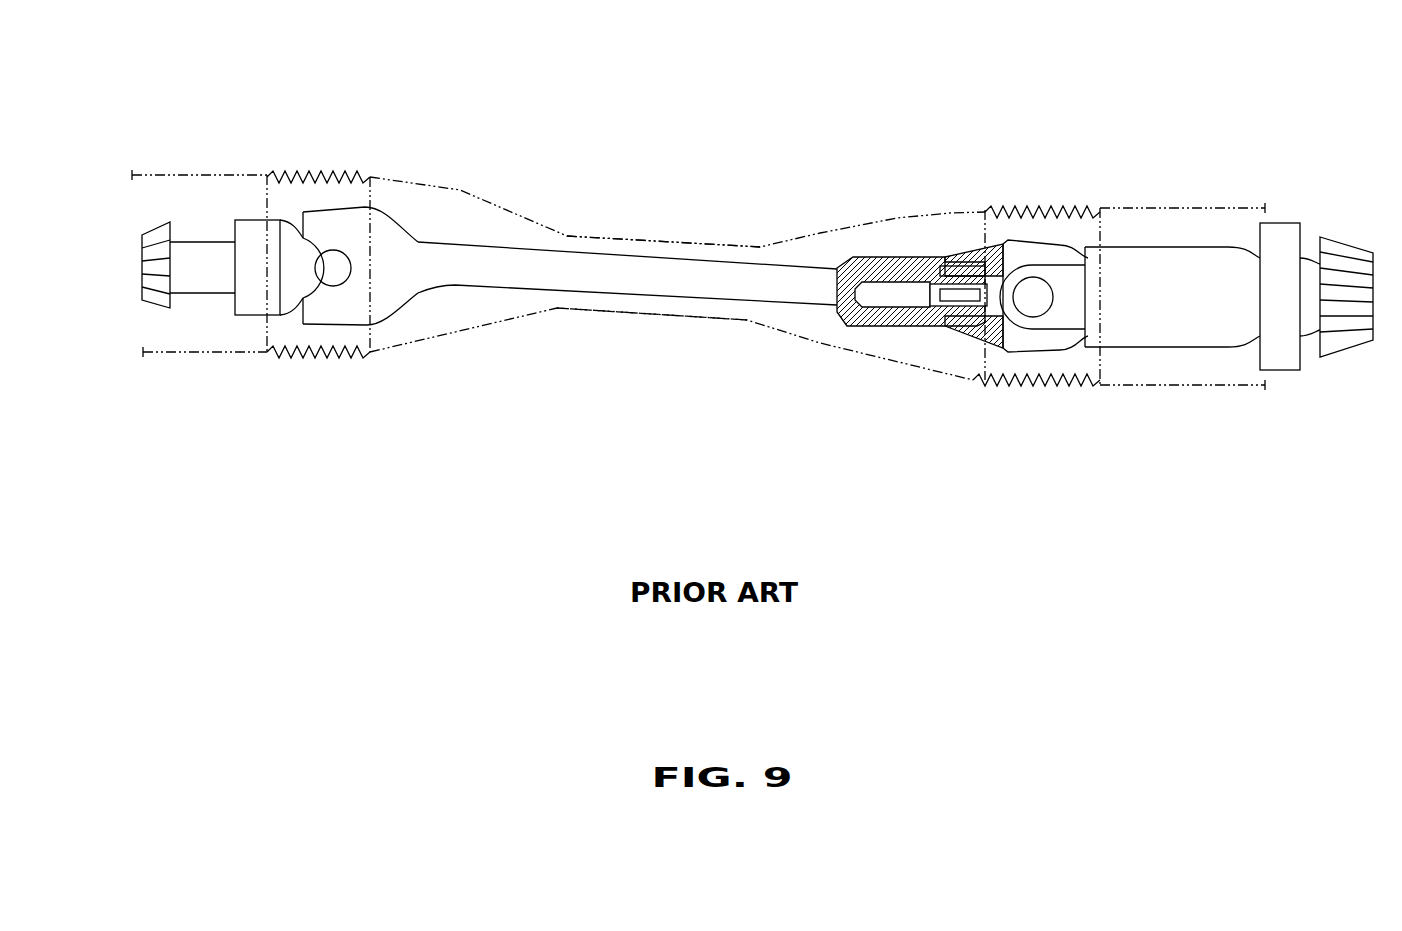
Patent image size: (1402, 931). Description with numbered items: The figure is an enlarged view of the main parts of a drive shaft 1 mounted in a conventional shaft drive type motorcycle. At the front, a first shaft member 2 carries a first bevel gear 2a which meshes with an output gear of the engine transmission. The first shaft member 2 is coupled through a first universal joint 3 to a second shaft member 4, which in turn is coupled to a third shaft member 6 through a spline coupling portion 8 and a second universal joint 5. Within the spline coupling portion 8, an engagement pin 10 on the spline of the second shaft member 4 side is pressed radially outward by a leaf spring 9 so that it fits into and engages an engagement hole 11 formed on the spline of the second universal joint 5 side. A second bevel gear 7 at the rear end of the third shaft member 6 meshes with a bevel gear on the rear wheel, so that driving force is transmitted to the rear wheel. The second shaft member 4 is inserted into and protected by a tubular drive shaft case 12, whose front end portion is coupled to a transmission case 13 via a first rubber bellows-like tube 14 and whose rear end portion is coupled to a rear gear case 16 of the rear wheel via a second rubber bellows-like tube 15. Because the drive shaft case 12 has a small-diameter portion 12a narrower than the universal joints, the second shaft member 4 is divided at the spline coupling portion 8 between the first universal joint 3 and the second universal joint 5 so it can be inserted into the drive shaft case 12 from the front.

The drive shaft 1 is at (558, 244).
The first shaft member 2 is at (188, 248).
The first bevel gear 2a is at (152, 230).
The first universal joint 3 is at (321, 324).
The second shaft member 4 is at (618, 268).
The second universal joint 5 is at (1044, 357).
The third shaft member 6 is at (1198, 336).
The second bevel gear 7 is at (1347, 350).
The spline coupling portion 8 is at (891, 342).
The leaf spring 9 is at (945, 302).
The engagement pin 10 is at (938, 277).
The engagement hole 11 is at (948, 268).
The drive shaft case 12 is at (512, 320).
The small-diameter portion 12a is at (650, 313).
The transmission case 13 is at (190, 352).
The first rubber bellows-like tube 14 is at (330, 180).
The second rubber bellows-like tube 15 is at (1070, 208).
The rear gear case 16 is at (1235, 208).